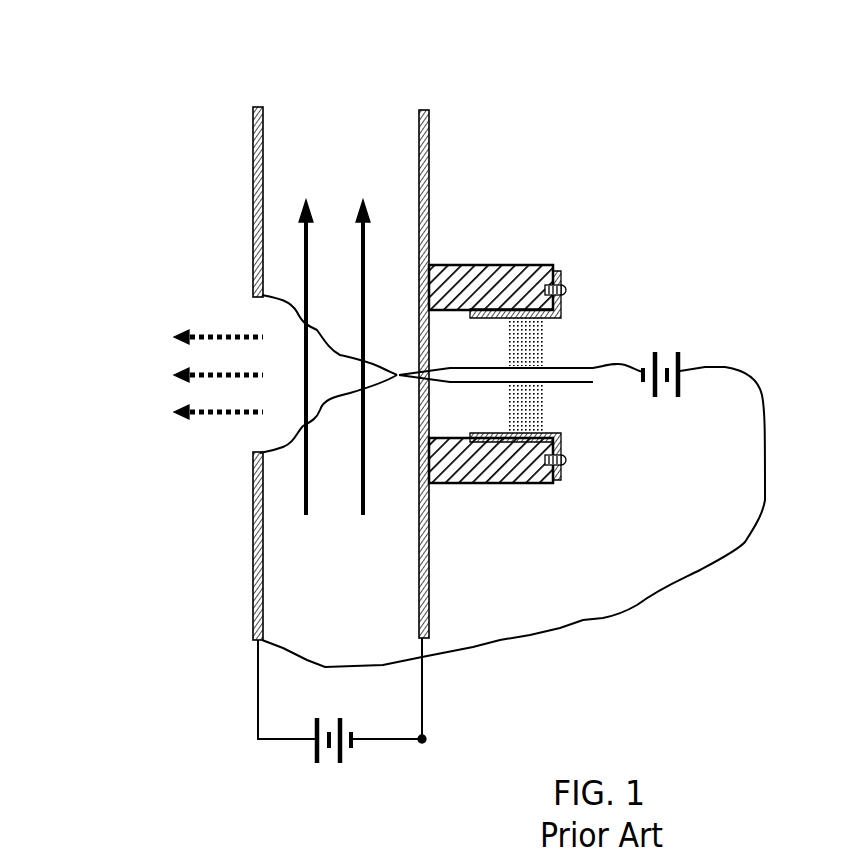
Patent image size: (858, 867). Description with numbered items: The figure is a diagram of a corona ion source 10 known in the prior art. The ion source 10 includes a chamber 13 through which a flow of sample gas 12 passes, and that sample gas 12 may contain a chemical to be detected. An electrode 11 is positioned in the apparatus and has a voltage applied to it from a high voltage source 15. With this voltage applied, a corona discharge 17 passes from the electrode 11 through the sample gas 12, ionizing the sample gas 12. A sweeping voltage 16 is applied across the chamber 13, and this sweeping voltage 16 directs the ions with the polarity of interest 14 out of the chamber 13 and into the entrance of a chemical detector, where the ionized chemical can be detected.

The ion source 10 is at (450, 443).
The electrode 11 is at (435, 367).
The sample gas 12 is at (362, 197).
The chamber 13 is at (317, 150).
The ions with the polarity of interest 14 is at (212, 337).
The high voltage source 15 is at (678, 352).
The sweeping voltage 16 is at (340, 763).
The corona discharge 17 is at (321, 410).